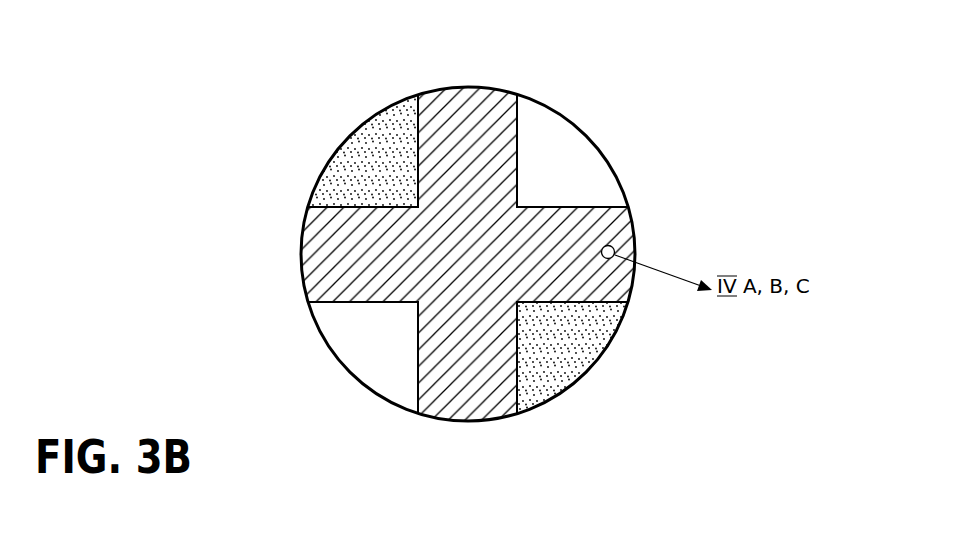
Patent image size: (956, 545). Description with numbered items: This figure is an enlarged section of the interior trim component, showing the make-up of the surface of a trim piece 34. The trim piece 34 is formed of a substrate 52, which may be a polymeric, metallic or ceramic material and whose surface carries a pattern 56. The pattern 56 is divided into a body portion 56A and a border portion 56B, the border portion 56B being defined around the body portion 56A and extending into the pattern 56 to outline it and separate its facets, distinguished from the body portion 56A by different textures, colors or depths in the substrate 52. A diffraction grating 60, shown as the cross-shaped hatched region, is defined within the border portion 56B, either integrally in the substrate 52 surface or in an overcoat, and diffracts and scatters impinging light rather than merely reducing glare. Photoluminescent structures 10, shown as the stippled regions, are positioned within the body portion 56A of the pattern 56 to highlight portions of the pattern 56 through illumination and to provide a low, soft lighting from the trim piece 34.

The photoluminescent structure 10 is at (360, 148).
The trim piece 34 is at (276, 159).
The substrate 52 is at (582, 185).
The pattern 56 is at (536, 93).
The body portion 56A is at (562, 156).
The border portion 56B is at (312, 285).
The diffraction grating 60 is at (327, 248).